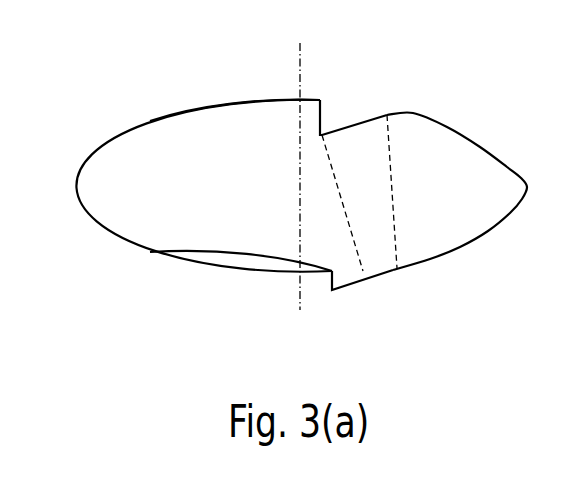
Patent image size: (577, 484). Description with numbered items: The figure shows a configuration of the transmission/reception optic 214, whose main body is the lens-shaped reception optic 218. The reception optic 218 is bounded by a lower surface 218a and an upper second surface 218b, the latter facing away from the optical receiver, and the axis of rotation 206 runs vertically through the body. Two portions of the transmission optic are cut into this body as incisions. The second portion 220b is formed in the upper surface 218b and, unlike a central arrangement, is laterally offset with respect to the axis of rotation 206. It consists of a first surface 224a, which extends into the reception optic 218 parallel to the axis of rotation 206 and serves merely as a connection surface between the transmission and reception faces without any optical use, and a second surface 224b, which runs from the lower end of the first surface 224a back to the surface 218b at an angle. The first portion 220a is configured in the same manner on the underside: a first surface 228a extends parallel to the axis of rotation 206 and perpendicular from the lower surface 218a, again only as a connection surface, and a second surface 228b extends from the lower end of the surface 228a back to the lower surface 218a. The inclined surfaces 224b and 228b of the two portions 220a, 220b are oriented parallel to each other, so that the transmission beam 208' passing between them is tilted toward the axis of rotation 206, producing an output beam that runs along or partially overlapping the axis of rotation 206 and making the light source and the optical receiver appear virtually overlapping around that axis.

The transmission/reception optic 214 is at (279, 188).
The reception optic 218 is at (301, 188).
The lower surface of the reception optic 218a is at (147, 252).
The second surface of the reception optic 218b is at (145, 123).
The axis of rotation 206 is at (300, 82).
The first portion of the transmission optic 220a is at (383, 275).
The second portion of the transmission optic 220b is at (356, 124).
The first surface of the second portion 224a is at (321, 120).
The second surface of the second portion 224b is at (383, 115).
The first surface of the first portion 228a is at (332, 280).
The second surface of the first portion 228b is at (390, 272).
The transmission beam 208' is at (416, 207).